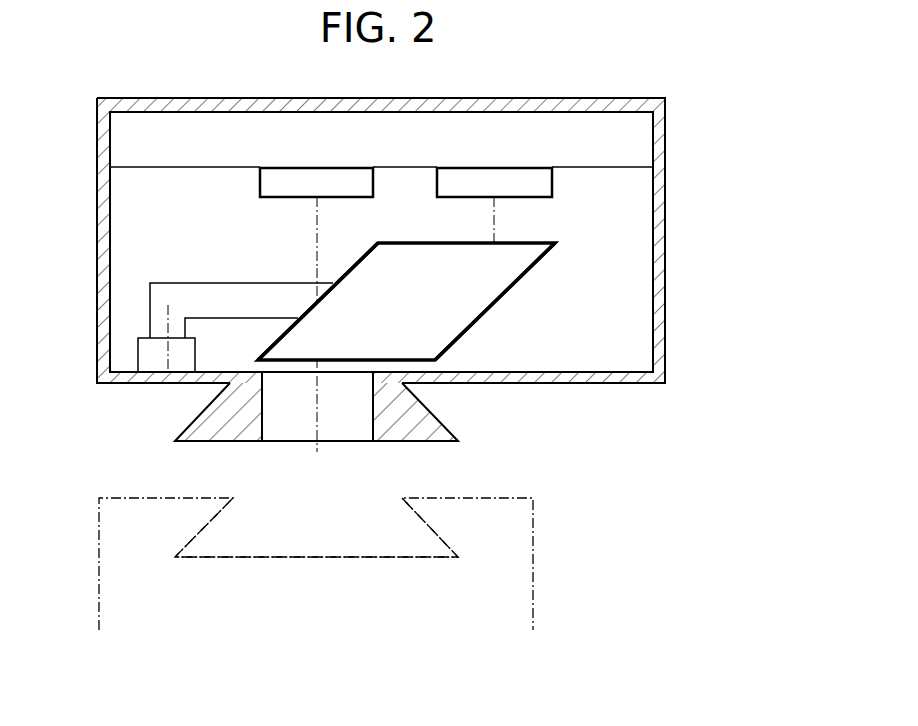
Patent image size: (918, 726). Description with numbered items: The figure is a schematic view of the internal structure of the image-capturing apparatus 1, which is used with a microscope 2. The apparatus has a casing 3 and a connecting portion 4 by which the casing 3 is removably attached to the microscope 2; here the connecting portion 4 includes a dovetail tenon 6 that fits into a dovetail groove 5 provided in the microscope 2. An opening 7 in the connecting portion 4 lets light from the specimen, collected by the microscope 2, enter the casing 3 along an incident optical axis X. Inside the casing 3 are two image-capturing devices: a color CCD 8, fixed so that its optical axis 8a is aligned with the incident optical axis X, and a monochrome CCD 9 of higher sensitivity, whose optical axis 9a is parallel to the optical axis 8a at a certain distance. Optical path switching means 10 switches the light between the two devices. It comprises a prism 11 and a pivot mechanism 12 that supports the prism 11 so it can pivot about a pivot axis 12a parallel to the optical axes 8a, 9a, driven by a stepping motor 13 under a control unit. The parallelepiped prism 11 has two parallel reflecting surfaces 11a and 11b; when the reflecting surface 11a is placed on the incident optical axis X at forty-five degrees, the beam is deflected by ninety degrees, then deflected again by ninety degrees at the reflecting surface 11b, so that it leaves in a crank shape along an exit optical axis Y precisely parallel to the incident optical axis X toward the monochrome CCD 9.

The image-capturing apparatus 1 is at (394, 274).
The microscope 2 is at (535, 557).
The casing 3 is at (665, 205).
The connecting portion 4 is at (365, 430).
The dovetail groove 5 is at (425, 522).
The dovetail tenon 6 is at (436, 415).
The opening 7 is at (372, 432).
The color CCD 8 is at (374, 181).
The optical axis of color CCD 8a is at (320, 215).
The monochrome CCD 9 is at (553, 181).
The optical axis of monochrome CCD 9a is at (496, 215).
The optical path switching means 10 is at (327, 275).
The prism 11 is at (418, 246).
The reflecting surface 11a is at (352, 270).
The reflecting surface 11b is at (506, 280).
The pivot mechanism 12 is at (178, 283).
The pivot axis 12a is at (165, 313).
The stepping motor 13 is at (195, 348).
The incident optical axis X is at (318, 427).
The exit optical axis Y is at (494, 256).